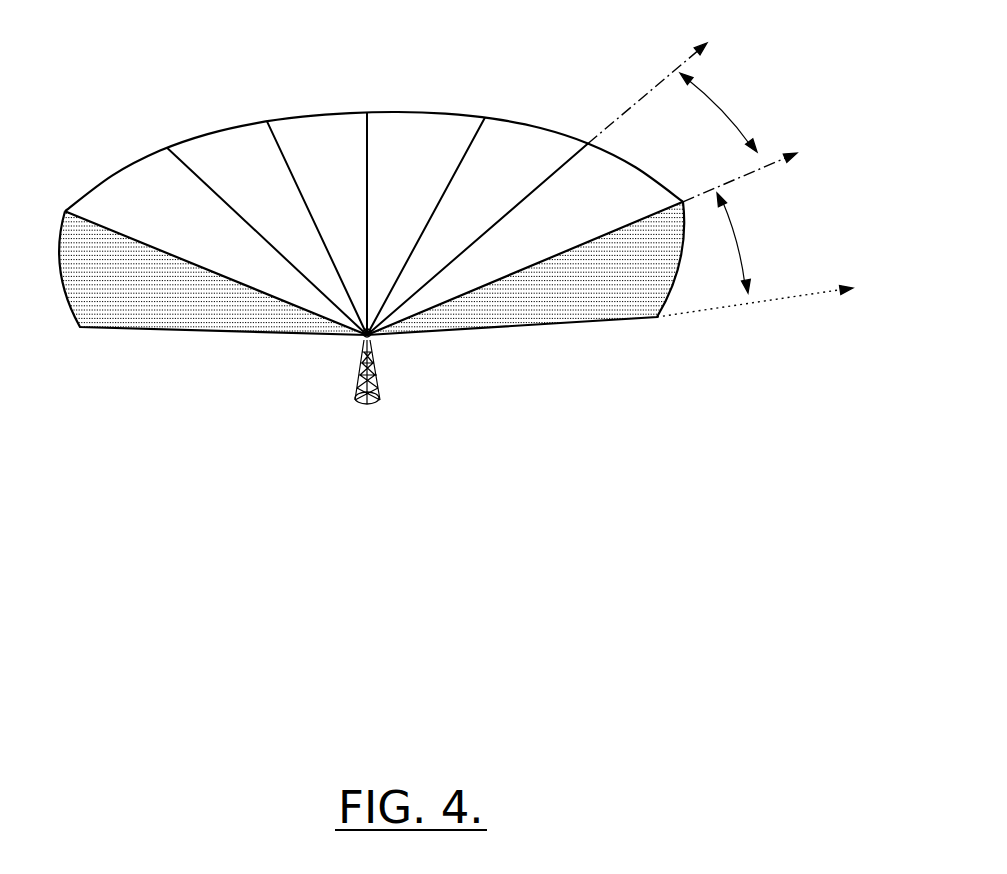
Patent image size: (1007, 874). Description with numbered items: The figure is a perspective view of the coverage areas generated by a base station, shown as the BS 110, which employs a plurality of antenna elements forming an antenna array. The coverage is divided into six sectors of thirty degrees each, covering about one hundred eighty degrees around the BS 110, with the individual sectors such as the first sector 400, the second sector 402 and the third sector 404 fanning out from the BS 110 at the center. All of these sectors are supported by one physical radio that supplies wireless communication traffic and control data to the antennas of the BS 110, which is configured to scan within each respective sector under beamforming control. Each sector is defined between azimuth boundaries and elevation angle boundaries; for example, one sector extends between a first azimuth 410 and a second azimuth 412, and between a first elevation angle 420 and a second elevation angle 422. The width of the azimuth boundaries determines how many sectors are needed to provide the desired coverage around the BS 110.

The first sector 400 is at (125, 182).
The second sector 402 is at (222, 143).
The third sector 404 is at (320, 128).
The BS 110 is at (355, 395).
The first azimuth 410 is at (818, 138).
The second azimuth 412 is at (653, 83).
The first elevation angle 420 is at (785, 294).
The second elevation angle 422 is at (727, 182).